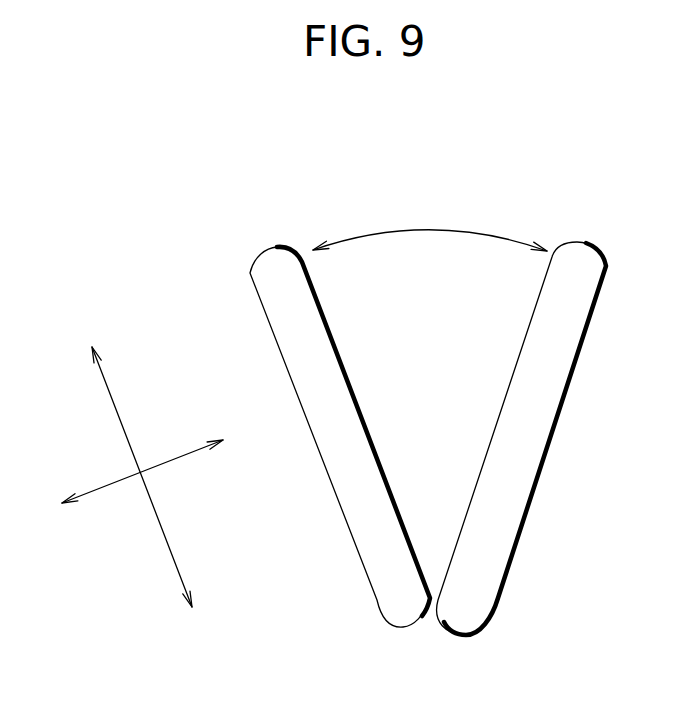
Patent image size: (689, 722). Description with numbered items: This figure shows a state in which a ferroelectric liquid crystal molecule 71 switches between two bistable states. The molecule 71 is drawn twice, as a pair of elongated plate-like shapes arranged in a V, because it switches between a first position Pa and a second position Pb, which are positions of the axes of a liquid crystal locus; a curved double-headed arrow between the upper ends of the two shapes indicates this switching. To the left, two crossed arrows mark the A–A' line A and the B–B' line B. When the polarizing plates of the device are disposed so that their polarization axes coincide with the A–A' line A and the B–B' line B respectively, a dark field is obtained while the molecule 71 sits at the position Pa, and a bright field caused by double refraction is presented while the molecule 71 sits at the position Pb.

The molecule 71 is at (421, 413).
The position Pa is at (333, 409).
The position Pb is at (521, 413).
The A–A' line A is at (155, 468).
The B–B' line B is at (137, 450).